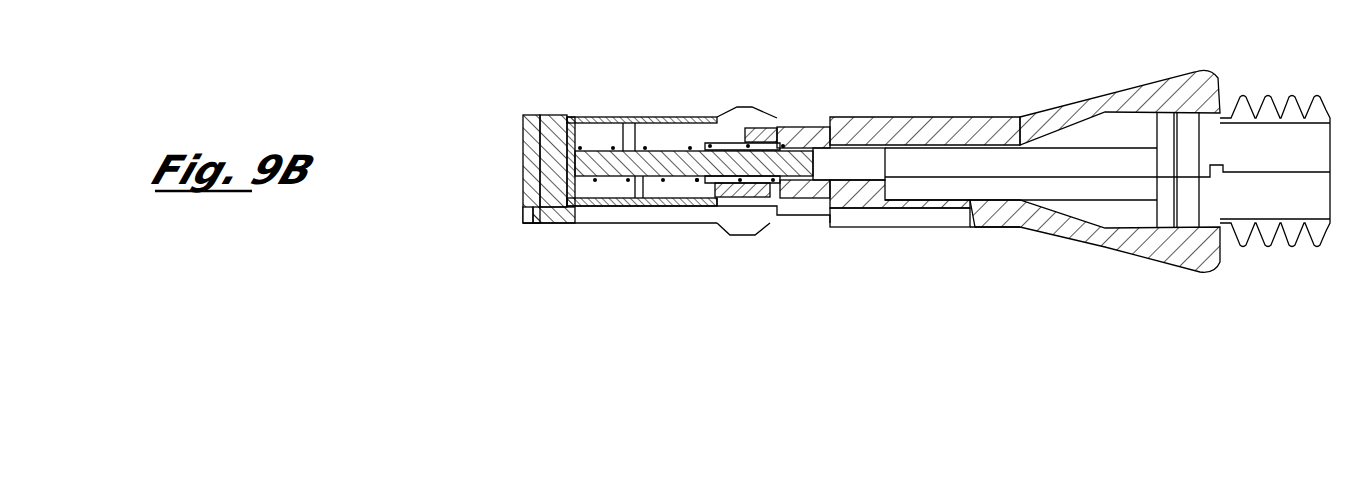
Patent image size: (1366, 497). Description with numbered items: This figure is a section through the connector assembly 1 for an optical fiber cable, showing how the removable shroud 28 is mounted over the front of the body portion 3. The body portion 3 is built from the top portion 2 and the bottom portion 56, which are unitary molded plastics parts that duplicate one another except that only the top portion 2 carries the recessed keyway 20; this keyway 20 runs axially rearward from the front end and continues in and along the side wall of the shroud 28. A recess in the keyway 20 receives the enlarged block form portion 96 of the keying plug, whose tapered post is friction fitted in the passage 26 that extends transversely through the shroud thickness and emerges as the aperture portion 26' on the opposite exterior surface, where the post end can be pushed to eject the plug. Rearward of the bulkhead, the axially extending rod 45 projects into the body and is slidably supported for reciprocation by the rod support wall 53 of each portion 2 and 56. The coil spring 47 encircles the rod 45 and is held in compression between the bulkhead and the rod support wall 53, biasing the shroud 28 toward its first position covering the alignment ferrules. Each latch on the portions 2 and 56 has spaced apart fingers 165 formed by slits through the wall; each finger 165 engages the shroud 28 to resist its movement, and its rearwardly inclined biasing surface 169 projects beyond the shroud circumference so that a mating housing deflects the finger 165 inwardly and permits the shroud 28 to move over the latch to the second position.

The connector assembly 1 is at (957, 235).
The top portion 2 is at (875, 221).
The body portion 3 is at (1038, 100).
The keyway 20 is at (618, 223).
The passage 26 is at (563, 250).
The aperture portion 26' is at (517, 122).
The shroud 28 is at (667, 221).
The rod 45 is at (623, 123).
The coil spring 47 is at (612, 147).
The rod support wall 53 is at (777, 120).
The bottom portion 56 is at (949, 117).
The block form portion 96 is at (540, 223).
The finger 165 is at (748, 128).
The biasing surface 169 is at (723, 117).